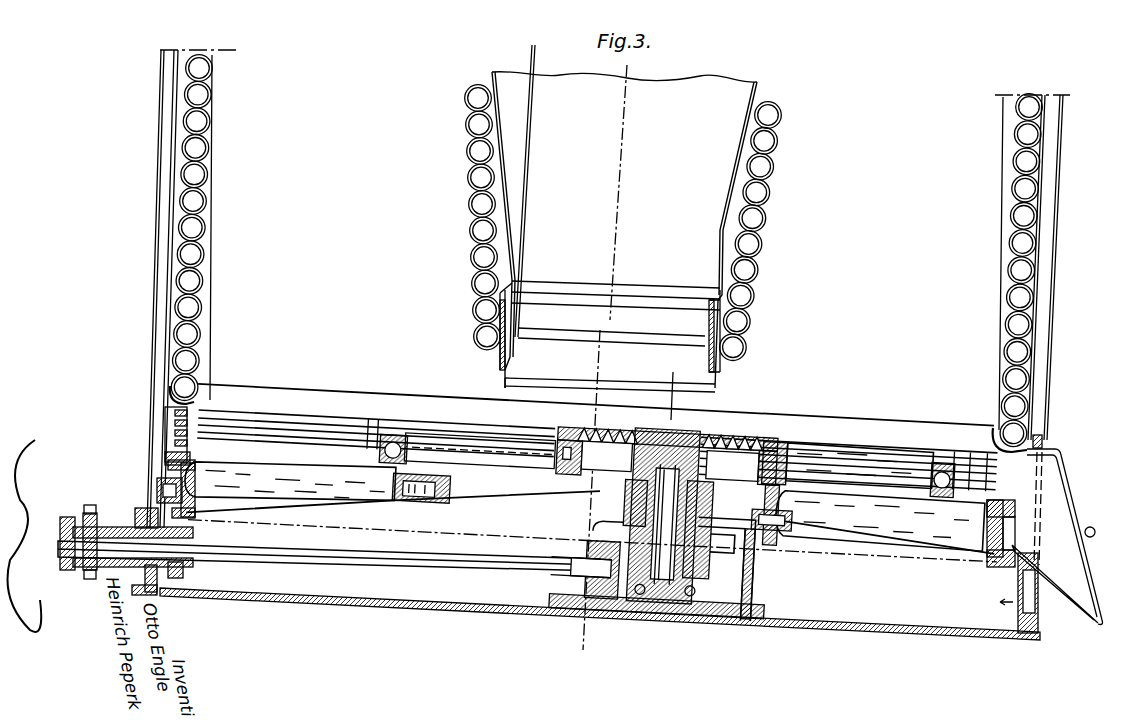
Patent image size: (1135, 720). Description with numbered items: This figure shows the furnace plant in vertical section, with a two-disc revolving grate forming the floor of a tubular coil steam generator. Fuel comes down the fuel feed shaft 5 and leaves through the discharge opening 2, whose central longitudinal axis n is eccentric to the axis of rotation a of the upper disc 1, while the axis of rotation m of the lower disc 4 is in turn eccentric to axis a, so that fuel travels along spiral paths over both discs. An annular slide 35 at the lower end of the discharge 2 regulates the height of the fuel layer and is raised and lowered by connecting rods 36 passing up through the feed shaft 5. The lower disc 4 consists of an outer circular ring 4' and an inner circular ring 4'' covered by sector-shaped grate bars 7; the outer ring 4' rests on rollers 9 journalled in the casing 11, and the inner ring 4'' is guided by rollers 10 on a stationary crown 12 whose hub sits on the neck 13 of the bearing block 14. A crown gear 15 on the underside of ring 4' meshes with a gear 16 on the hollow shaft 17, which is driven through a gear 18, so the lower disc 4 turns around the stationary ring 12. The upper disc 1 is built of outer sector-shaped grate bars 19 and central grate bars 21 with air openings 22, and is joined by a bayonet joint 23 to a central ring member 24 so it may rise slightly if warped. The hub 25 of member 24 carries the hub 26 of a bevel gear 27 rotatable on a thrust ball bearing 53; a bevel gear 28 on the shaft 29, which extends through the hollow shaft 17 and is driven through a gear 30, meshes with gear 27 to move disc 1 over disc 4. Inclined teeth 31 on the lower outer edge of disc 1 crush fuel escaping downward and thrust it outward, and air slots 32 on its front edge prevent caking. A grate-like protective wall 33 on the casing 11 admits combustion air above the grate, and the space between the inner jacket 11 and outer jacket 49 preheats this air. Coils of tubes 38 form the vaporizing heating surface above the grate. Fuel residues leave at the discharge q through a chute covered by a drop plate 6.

The upper disc 1 is at (788, 458).
The discharge opening 2 is at (500, 313).
The lower disc 4 is at (1039, 496).
The outer circular ring 4' is at (194, 489).
The inner circular ring 4'' is at (775, 515).
The fuel feed shaft 5 is at (759, 86).
The drop plate 6 is at (1100, 593).
The sector-shaped grate bars 7 is at (285, 470).
The rollers 9 is at (158, 486).
The rollers 10 is at (446, 500).
The housing or casing 11 is at (165, 446).
The stationary crown 12 is at (452, 488).
The neck 13 is at (632, 497).
The bearing block or support 14 is at (757, 589).
The crown gear 15 is at (996, 562).
The gear 16 is at (176, 594).
The hollow shaft 17 is at (100, 515).
The gear 18 is at (92, 575).
The sector-shaped grate bars 19 is at (887, 465).
The sector-shaped grate bars 21 is at (641, 430).
The air openings 22 is at (584, 432).
The bayonet joint 23 is at (562, 470).
The central ring member 24 is at (757, 461).
The hub 25 is at (640, 470).
The hub 26 is at (708, 572).
The bevel gear 27 is at (723, 546).
The bevel gear 28 is at (598, 600).
The shaft 29 is at (473, 575).
The gear 30 is at (66, 573).
The inclined teeth 31 is at (930, 496).
The air slots 32 is at (397, 445).
The grate-like protective wall 33 is at (204, 445).
The annular slide 35 is at (504, 378).
The connecting rods 36 is at (530, 156).
The coils of tubes 38 is at (208, 170).
The outer jacket 49 is at (151, 236).
The thrust ball bearing 53 is at (662, 596).
The axis of rotation of the upper disc a is at (674, 396).
The axis of rotation of the lower disc m is at (597, 347).
The central longitudinal axis of the outlet n is at (620, 213).
The discharge q is at (1078, 501).